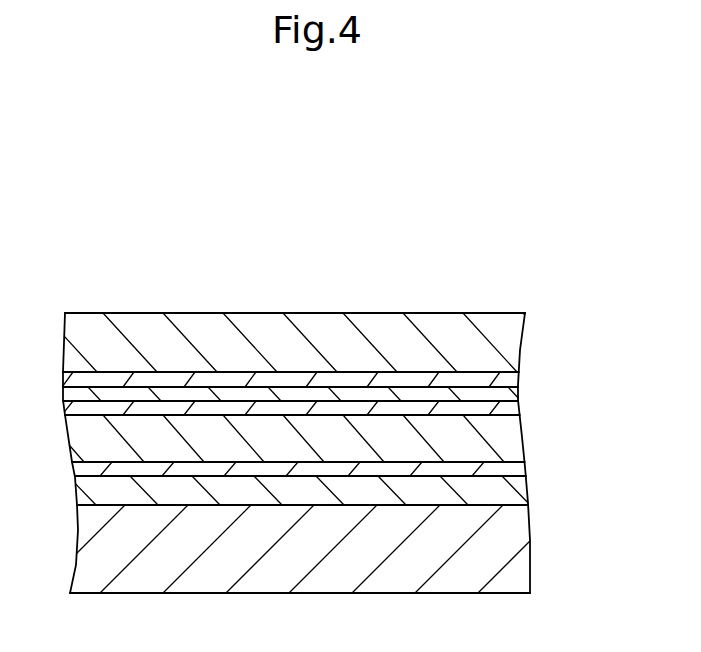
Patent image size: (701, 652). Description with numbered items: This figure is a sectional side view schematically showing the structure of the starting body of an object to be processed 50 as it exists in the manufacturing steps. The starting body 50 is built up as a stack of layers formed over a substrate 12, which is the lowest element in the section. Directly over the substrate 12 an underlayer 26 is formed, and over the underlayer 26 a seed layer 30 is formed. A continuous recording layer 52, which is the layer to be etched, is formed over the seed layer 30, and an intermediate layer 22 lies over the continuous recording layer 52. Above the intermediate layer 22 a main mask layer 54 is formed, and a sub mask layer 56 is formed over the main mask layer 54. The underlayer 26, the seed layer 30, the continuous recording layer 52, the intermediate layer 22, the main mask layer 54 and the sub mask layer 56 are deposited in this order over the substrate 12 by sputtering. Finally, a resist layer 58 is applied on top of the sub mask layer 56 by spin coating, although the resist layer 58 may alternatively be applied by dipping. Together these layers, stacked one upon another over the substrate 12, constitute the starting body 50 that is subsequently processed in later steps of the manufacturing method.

The starting body of an object to be processed 50 is at (335, 238).
The resist layer 58 is at (521, 335).
The sub mask layer 56 is at (519, 378).
The main mask layer 54 is at (518, 396).
The intermediate layer 22 is at (519, 415).
The continuous recording layer 52 is at (522, 442).
The seed layer 30 is at (525, 470).
The underlayer 26 is at (528, 495).
The substrate 12 is at (531, 555).